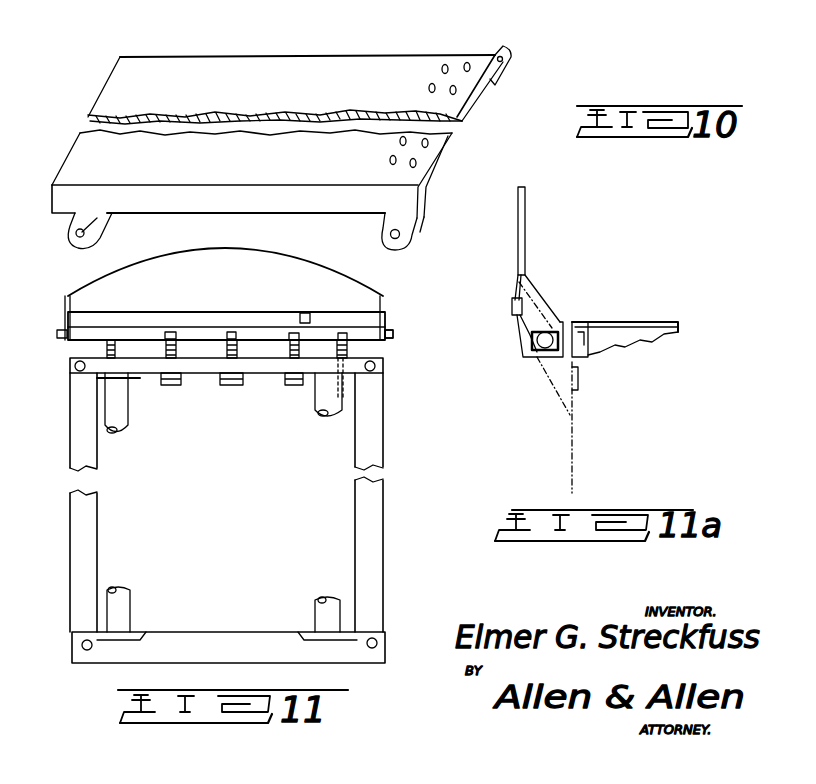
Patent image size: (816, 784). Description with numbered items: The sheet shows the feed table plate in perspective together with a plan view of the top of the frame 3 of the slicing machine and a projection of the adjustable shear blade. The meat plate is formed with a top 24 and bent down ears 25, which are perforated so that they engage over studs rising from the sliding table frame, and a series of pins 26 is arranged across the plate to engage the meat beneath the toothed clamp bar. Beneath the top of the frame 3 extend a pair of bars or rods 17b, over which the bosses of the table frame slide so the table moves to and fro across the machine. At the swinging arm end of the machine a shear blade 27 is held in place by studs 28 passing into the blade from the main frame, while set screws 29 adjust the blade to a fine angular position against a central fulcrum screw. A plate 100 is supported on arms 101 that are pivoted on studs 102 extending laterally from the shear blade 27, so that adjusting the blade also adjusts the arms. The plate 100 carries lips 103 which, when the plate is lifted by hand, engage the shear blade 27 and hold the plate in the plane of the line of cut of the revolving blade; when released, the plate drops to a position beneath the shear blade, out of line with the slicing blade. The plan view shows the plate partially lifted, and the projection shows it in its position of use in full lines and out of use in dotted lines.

In FIG. 10, the top 24 is at (410, 68).
In FIG. 10, the pins 26 is at (428, 143).
In FIG. 10, the bent down ears 25 is at (100, 240).
In FIG. 11, the plate 100 is at (340, 288).
In FIG. 11A, the plate 100 is at (527, 216).
In FIG. 11A, the arms 101 is at (535, 292).
In FIG. 11, the lips 103 is at (312, 318).
In FIG. 11A, the lips 103 is at (520, 303).
In FIG. 11, the studs 102 is at (390, 339).
In FIG. 11A, the studs 102 is at (530, 357).
In FIG. 11, the shear blade 27 is at (258, 335).
In FIG. 11A, the shear blade 27 is at (548, 316).
In FIG. 11, the studs 28 is at (175, 347).
In FIG. 11, the set screws 29 is at (117, 347).
In FIG. 11, the bars or rods 17b is at (127, 418).
In FIG. 11, the top of the frame 3 is at (97, 454).